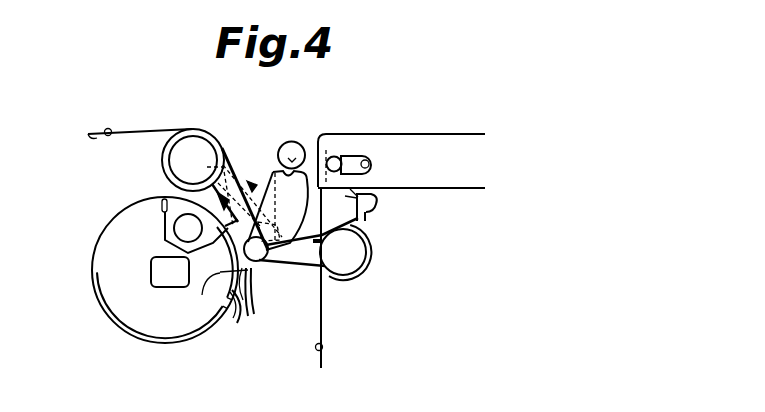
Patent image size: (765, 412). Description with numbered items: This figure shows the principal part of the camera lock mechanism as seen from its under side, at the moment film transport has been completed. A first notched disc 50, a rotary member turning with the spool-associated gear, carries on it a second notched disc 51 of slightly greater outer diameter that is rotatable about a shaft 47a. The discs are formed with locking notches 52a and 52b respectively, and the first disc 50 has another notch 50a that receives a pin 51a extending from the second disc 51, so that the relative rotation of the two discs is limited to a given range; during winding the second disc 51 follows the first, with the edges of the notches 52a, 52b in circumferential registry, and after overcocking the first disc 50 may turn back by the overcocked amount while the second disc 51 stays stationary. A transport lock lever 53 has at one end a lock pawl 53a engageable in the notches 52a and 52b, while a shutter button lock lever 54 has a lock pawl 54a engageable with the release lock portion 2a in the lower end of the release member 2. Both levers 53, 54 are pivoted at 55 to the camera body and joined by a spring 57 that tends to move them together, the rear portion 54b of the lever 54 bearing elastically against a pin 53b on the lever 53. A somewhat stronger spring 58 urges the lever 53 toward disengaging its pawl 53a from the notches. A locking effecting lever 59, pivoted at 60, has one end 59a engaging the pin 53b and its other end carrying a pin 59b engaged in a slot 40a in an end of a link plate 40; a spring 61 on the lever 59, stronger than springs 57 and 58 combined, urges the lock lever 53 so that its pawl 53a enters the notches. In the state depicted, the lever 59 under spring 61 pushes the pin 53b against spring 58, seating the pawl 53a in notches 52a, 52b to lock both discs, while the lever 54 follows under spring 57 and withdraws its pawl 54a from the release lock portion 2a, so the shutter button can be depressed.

The release member 2 is at (288, 143).
The release lock portion 2a is at (295, 162).
The link plate 40 is at (448, 185).
The slot 40a is at (369, 164).
The shaft 47a is at (150, 286).
The first notched disc 50 is at (104, 293).
The notch 50a is at (162, 206).
The second notched disc 51 is at (167, 347).
The pin 51a is at (177, 233).
The locking notch 52a is at (240, 320).
The locking notch 52b is at (232, 322).
The transport lock lever 53 is at (254, 310).
The lock pawl 53a is at (218, 291).
The pin 53b is at (268, 292).
The shutter button lock lever 54 is at (268, 183).
The lock pawl 54a is at (276, 170).
The rear portion 54b is at (266, 261).
The pivot 55 is at (191, 136).
The spring 57 is at (193, 160).
The spring 58 is at (133, 131).
The locking effecting lever 59 is at (377, 203).
The end 59a is at (278, 210).
The pin 59b is at (336, 157).
The pivot 60 is at (362, 254).
The spring 61 is at (322, 313).